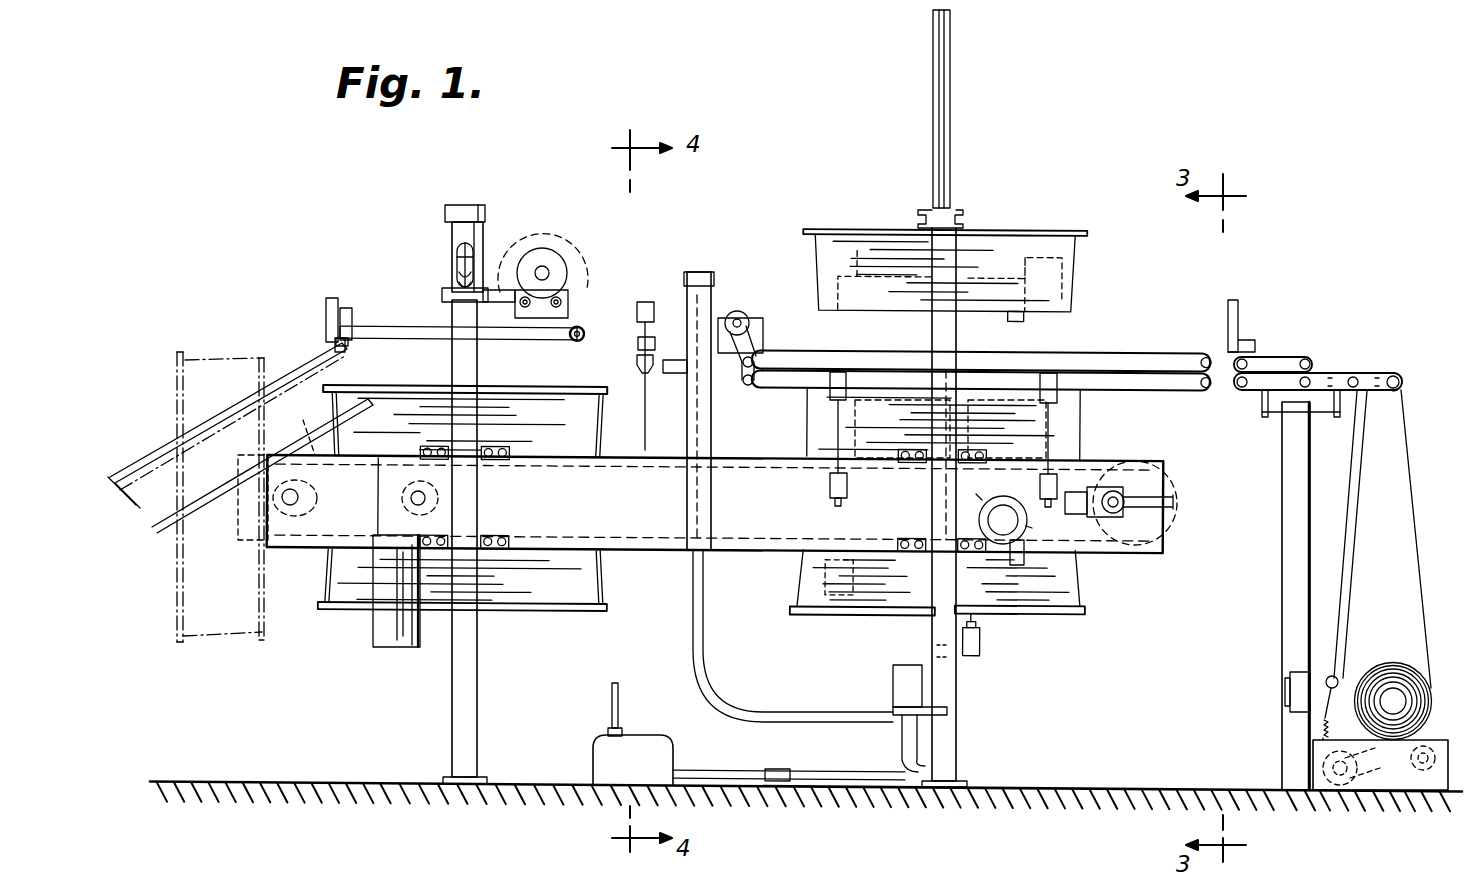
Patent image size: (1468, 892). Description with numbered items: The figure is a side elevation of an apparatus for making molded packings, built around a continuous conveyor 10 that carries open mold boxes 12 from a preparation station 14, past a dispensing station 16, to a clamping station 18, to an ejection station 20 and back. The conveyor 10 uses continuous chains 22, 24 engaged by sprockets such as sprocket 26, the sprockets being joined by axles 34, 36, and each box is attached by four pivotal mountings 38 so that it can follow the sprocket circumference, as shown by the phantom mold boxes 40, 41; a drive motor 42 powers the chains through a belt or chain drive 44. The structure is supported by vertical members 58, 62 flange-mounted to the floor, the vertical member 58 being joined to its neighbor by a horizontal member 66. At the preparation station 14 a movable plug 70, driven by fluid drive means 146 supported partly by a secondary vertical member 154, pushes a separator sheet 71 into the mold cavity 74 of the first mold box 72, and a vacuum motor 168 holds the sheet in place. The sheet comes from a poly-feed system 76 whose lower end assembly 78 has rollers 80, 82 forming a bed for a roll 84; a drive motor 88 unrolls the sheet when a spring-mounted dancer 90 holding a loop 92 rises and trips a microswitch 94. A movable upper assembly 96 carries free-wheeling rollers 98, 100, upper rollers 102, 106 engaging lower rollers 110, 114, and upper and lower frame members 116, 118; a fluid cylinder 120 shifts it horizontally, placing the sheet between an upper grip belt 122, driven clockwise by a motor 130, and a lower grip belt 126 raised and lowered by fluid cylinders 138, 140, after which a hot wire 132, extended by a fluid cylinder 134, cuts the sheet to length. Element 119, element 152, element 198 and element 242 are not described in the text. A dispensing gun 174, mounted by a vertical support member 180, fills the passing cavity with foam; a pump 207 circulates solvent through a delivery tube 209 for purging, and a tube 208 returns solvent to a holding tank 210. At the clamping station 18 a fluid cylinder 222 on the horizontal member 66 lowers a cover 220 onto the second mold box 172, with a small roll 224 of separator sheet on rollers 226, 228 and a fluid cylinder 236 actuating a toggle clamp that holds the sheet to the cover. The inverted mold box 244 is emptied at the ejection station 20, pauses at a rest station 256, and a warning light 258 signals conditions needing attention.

The continuous conveyor 10 is at (1146, 570).
The mold boxes 12 is at (1051, 628).
The preparation station 14 is at (1032, 204).
The dispensing station 16 is at (713, 248).
The clamping station 18 is at (487, 179).
The ejection station 20 is at (499, 634).
The chain 22 is at (770, 440).
The chain 24 is at (778, 452).
The sprocket 26 is at (1165, 548).
The axle 34 is at (1115, 488).
The axle 36 is at (300, 494).
The pivotal mountings 38 is at (906, 462).
The mold box shown in phantom 40 is at (235, 640).
The mold box shown in phantom 41 is at (300, 355).
The drive motor 42 is at (410, 648).
The belt or chain drive 44 is at (323, 512).
The vertical member 58 is at (462, 690).
The vertical member 62 is at (958, 752).
The horizontal member 66 is at (442, 291).
The movable plug 70 is at (1085, 280).
The separator sheet 71 is at (1420, 546).
The first mold box 72 is at (1082, 425).
The mold cavity 74 is at (808, 428).
The poly-feed system 76 is at (1438, 475).
The lower end assembly 78 is at (1262, 727).
The roller 80 is at (1348, 790).
The roller 82 is at (1418, 790).
The roll 84 is at (1420, 668).
The drive motor 88 is at (1320, 762).
The spring-mounted dancer 90 is at (1336, 677).
The loop 92 is at (1356, 592).
The microswitch 94 is at (1290, 690).
The movable upper assembly 96 is at (1375, 306).
The free-wheeling roller 98 is at (1353, 375).
The free-wheeling roller 100 is at (1398, 375).
The upper roller 102 is at (1256, 350).
The upper roller 106 is at (1305, 357).
The lower roller 110 is at (1244, 392).
The lower roller 114 is at (1318, 372).
The upper frame member 116 is at (1280, 356).
The lower frame member 118 is at (1262, 398).
The column 119 is at (1282, 588).
The fluid cylinder 120 is at (1335, 417).
The upper grip belt 122 is at (1108, 352).
The lower grip belt 126 is at (1165, 392).
The motor 130 is at (740, 312).
The hot wire 132 is at (1230, 360).
The fluid cylinder 134 is at (1238, 304).
The fluid cylinder 138 is at (830, 492).
The fluid cylinder 140 is at (1058, 485).
The fluid drive means 146 is at (950, 46).
The bracket 152 is at (920, 210).
The secondary vertical member 154 is at (958, 338).
The vacuum motor 168 is at (978, 515).
The second mold box 172 is at (525, 385).
The dispensing gun 174 is at (646, 300).
The vertical support member 180 is at (712, 522).
The tray 198 is at (670, 476).
The pump 207 is at (893, 690).
The tube 208 is at (640, 403).
The delivery tube 209 is at (760, 718).
The holding tank 210 is at (672, 742).
The cover 220 is at (398, 340).
The fluid cylinder 222 is at (447, 222).
The small roll 224 is at (552, 250).
The roller 226 is at (543, 245).
The roller 228 is at (571, 296).
The fluid cylinder 236 is at (325, 304).
The block 242 is at (353, 316).
The mold box 244 is at (572, 614).
The rest station 256 is at (894, 627).
The warning light 258 is at (458, 252).